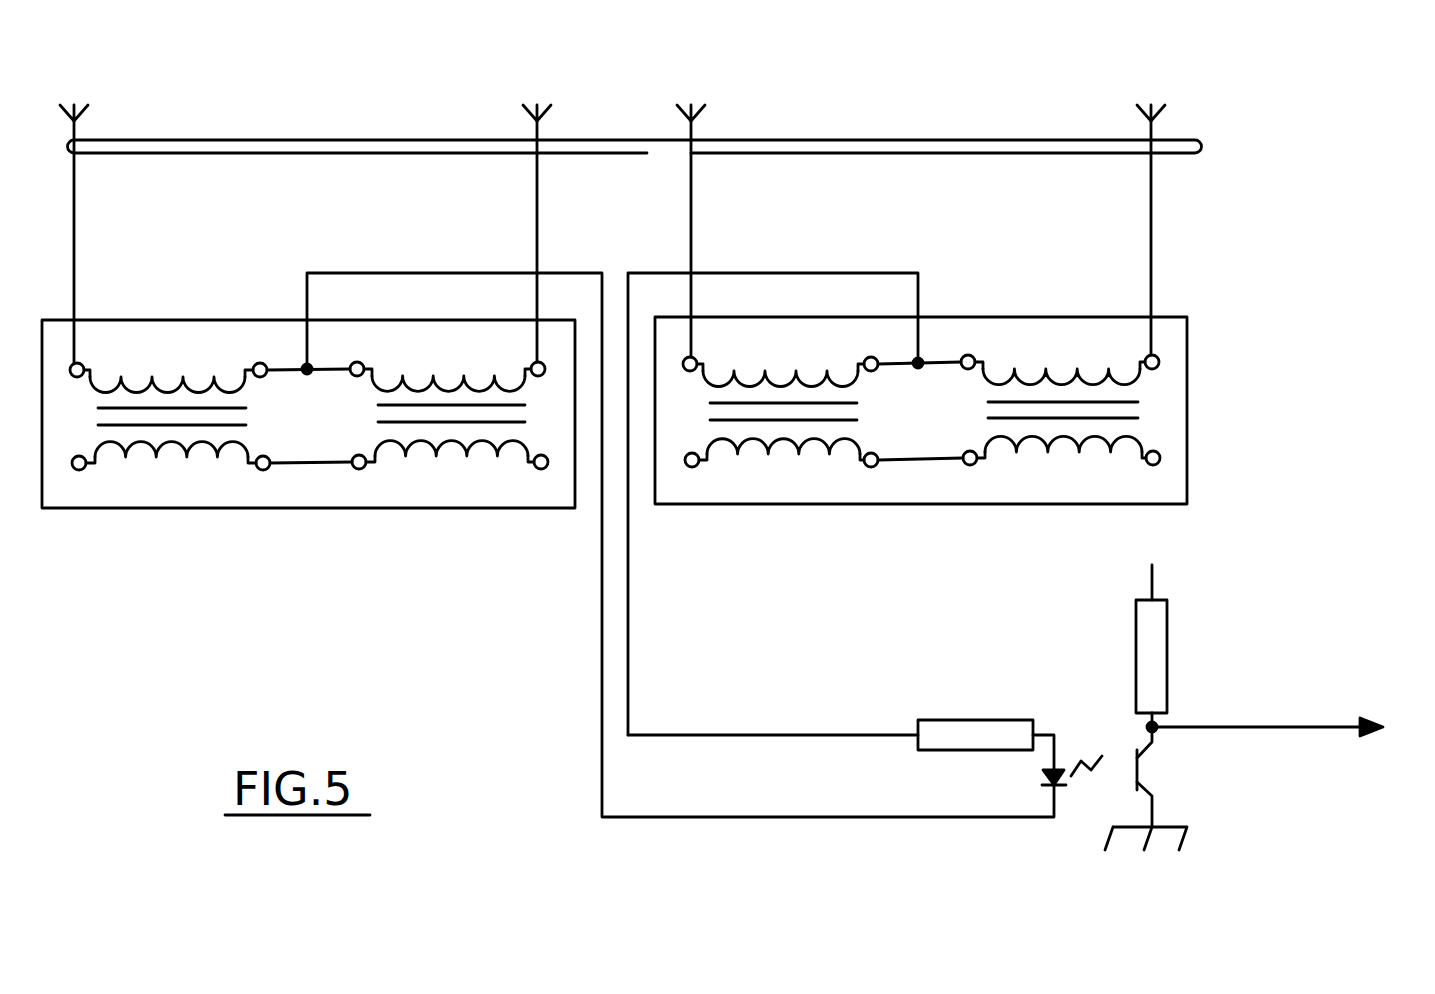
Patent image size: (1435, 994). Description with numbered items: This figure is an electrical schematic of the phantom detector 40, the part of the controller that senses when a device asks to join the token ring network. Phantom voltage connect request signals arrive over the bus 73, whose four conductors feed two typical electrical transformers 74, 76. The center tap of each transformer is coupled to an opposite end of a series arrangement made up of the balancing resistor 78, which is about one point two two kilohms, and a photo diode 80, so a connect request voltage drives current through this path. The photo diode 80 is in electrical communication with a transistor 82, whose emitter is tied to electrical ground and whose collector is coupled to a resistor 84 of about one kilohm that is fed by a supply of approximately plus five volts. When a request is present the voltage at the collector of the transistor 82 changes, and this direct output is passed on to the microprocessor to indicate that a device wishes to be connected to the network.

The phantom detector 40 is at (666, 206).
The bus 73 is at (1197, 151).
The electrical transformer 74 is at (393, 502).
The electrical transformer 76 is at (983, 495).
The balancing resistor 78 is at (1040, 716).
The photo diode 80 is at (1043, 776).
The transistor 82 is at (1147, 775).
The resistor 84 is at (1168, 622).